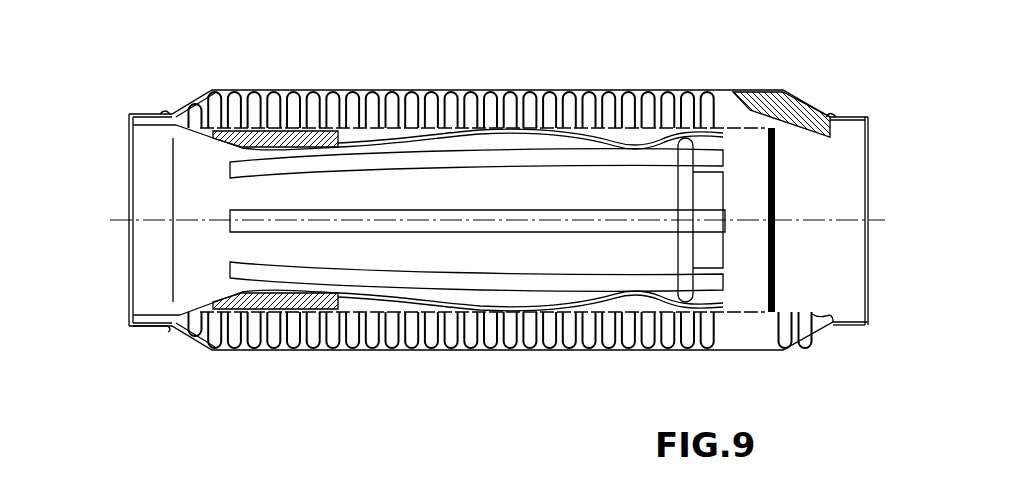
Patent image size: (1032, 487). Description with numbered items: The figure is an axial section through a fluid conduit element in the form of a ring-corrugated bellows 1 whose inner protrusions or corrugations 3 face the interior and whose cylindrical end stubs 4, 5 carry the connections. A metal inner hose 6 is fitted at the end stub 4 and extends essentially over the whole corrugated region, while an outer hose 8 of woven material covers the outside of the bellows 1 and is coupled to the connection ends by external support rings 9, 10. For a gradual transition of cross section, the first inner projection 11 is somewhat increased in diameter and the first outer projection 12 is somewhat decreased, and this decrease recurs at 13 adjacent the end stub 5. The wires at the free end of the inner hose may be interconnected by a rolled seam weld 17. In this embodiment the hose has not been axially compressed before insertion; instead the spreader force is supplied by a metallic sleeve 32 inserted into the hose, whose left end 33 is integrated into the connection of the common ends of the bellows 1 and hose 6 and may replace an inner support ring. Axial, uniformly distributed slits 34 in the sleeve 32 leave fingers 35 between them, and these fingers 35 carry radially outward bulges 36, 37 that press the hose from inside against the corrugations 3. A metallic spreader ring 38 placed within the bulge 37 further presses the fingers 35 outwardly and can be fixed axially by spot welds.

The ring-corrugated bellows 1 is at (403, 97).
The inner protrusions 3 is at (356, 120).
The end stub 4 is at (175, 322).
The end stub 5 is at (840, 320).
The inner hose 6 is at (273, 146).
The outer hose 8 is at (783, 103).
The external support ring 9 is at (148, 112).
The external support ring 10 is at (848, 117).
The first inner projection 11 is at (173, 119).
The first outer projection 12 is at (187, 332).
The decreased-diameter outer projection 13 is at (800, 343).
The rolled seam weld 17 is at (776, 253).
The metallic sleeve 32 is at (200, 263).
The left end of the sleeve 33 is at (148, 174).
The slits 34 is at (437, 280).
The fingers 35 is at (470, 192).
The bulge 36 is at (373, 297).
The bulge 37 is at (653, 305).
The spreader ring 38 is at (683, 177).